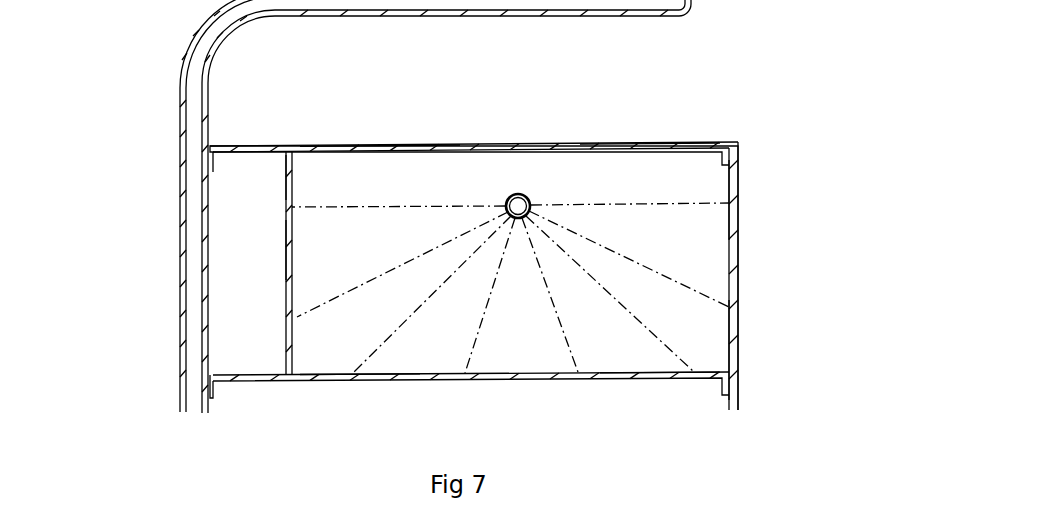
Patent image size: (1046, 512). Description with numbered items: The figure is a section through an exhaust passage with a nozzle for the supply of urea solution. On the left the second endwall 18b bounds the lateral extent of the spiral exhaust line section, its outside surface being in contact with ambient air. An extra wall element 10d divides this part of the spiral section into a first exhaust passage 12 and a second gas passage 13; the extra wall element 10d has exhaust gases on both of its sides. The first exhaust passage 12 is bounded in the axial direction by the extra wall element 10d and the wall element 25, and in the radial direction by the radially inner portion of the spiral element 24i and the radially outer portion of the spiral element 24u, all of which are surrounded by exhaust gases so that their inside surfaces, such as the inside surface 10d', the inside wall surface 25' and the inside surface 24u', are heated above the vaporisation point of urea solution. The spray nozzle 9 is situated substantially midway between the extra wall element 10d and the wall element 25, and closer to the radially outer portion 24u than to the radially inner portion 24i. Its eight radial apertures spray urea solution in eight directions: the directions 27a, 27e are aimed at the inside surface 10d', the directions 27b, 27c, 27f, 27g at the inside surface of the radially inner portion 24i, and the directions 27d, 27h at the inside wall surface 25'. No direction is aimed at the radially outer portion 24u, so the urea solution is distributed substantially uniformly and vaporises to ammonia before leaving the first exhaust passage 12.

The second endwall 18b is at (180, 187).
The second gas passage 13 is at (242, 272).
The extra wall element 10d is at (260, 263).
The inside surface of the extra wall element 10d' is at (254, 248).
The first exhaust passage 12 is at (479, 190).
The spray nozzle 9 is at (521, 205).
The radially outer portion of the spiral wall element 24u is at (474, 234).
The inside surface of the radially outer portion of the spiral element 24u' is at (650, 102).
The radially inner portion of the spiral wall element 24i is at (530, 382).
The wall element 25 is at (796, 276).
The inside wall surface of the wall element 25' is at (794, 200).
The spray direction 27a is at (397, 207).
The spray direction 27b is at (392, 332).
The spray direction 27c is at (558, 312).
The spray direction 27d is at (625, 258).
The spray direction 27e is at (408, 266).
The spray direction 27f is at (464, 295).
The spray direction 27g is at (620, 302).
The spray direction 27h is at (613, 203).